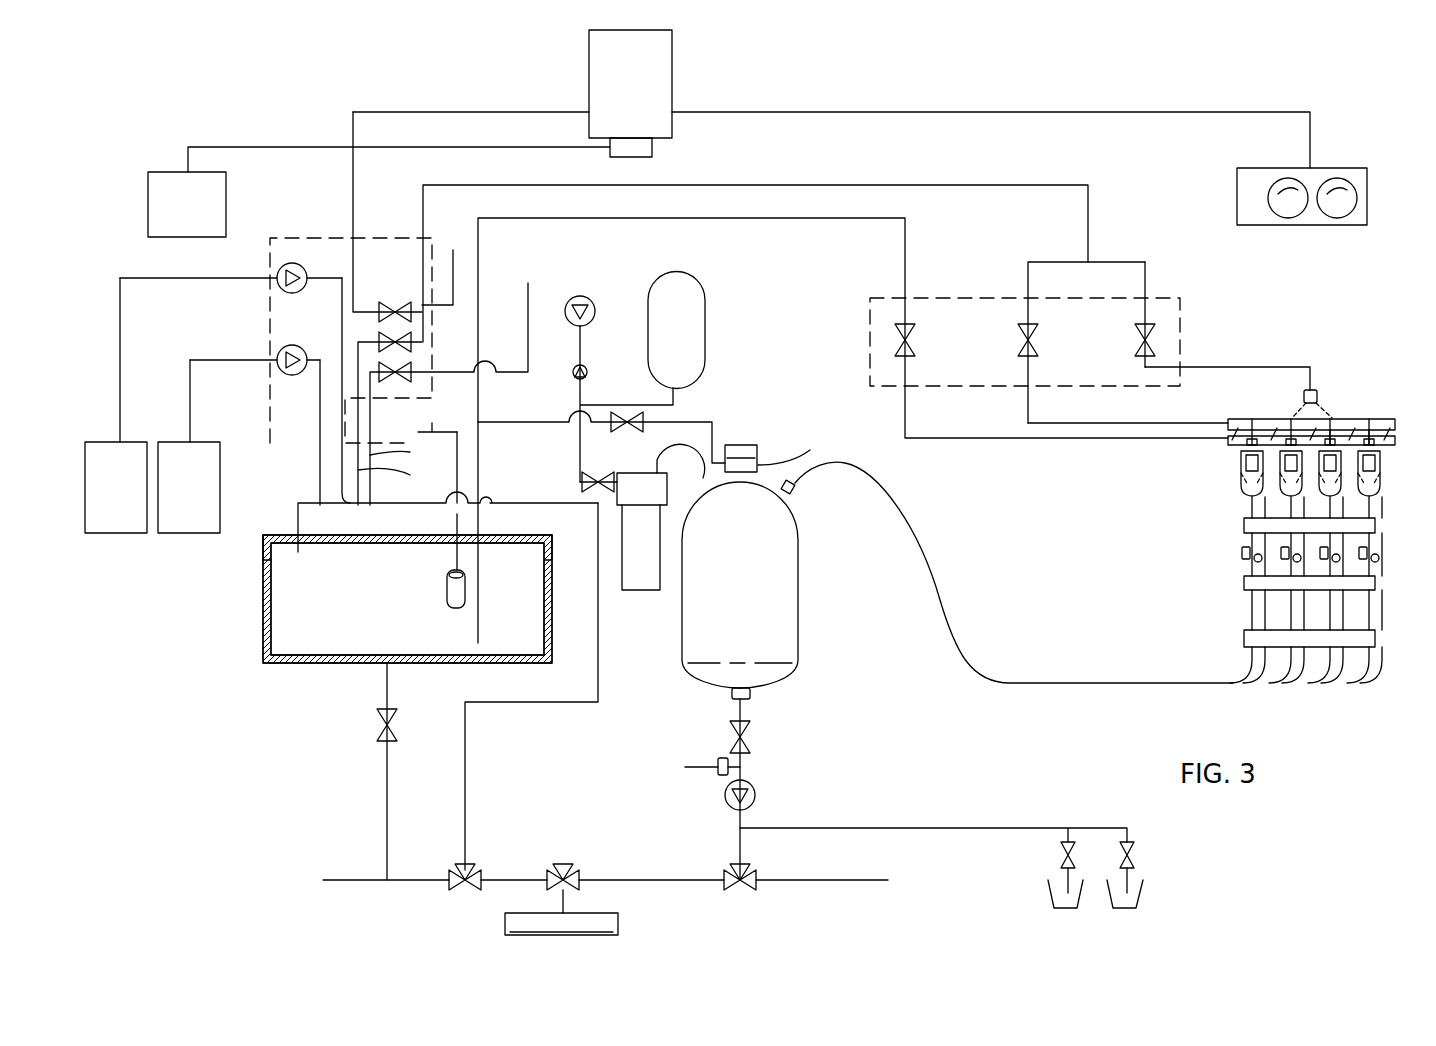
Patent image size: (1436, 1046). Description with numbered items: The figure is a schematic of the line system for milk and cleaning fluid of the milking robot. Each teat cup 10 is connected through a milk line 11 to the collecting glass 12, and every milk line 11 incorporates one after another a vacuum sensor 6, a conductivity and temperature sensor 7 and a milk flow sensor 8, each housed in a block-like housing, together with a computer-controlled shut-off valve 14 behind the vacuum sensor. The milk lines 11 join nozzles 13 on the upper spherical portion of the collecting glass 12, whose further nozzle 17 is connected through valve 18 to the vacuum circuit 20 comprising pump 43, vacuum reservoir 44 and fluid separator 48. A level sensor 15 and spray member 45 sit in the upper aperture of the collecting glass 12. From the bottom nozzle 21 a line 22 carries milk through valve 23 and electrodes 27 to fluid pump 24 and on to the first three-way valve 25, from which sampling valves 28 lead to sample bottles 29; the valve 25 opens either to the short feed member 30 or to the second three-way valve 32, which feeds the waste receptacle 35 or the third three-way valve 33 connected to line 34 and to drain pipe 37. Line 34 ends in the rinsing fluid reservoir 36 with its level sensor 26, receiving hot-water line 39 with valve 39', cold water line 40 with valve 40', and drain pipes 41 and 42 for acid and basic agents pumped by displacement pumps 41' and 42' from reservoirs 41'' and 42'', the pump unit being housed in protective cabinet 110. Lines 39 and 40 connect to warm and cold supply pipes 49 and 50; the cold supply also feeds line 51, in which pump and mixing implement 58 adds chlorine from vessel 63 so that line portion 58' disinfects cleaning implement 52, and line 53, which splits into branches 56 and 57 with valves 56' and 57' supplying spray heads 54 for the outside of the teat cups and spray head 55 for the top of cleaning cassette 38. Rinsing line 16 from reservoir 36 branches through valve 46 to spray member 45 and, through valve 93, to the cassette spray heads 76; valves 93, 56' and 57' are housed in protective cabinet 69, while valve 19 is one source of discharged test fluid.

The vacuum sensor 6 is at (1244, 522).
The conductivity sensor 7 is at (1244, 580).
The milk flow sensor 8 is at (1244, 636).
The teat cups 10 is at (1240, 485).
The milk line 11 is at (1365, 666).
The collecting glass 12 is at (798, 630).
The nozzles 13 is at (793, 478).
The shut-off valve 14 is at (1380, 558).
The level sensor 15 is at (757, 447).
The rinsing fluid line 16 is at (480, 246).
The nozzle 17 is at (661, 474).
The valve 18 is at (580, 482).
The valve 19 is at (378, 730).
The vacuum circuit 20 is at (612, 352).
The nozzle 21 is at (750, 692).
The line 22 is at (738, 706).
The valve 23 is at (750, 740).
The fluid pump 24 is at (755, 790).
The first three-way valve 25 is at (745, 892).
The level sensor 26 is at (447, 595).
The electrodes 27 is at (685, 767).
The valves 28 is at (937, 860).
The sample bottles 29 is at (1125, 925).
The feed member 30 is at (888, 880).
The second three-way valve 32 is at (570, 870).
The third three-way valve 33 is at (455, 892).
The line 34 is at (467, 808).
The receptacle 35 is at (618, 920).
The reservoir 36 is at (263, 640).
The drain pipe 37 is at (340, 880).
The cleaning cassette 38 is at (1365, 432).
The hot-water supply line 39 is at (407, 453).
The valve 39' is at (427, 383).
The cold water line 40 is at (401, 478).
The valve 40' is at (420, 417).
The drain pipe 41 is at (367, 407).
The displacement pump 41' is at (231, 270).
The reservoir 41'' is at (122, 433).
The drain pipe 42 is at (290, 432).
The displacement pump 42' is at (255, 350).
The reservoir 42'' is at (189, 484).
The vacuum pump 43 is at (588, 300).
The vacuum reservoir 44 is at (705, 295).
The spray member 45 is at (810, 450).
The valve 46 is at (620, 432).
The fluid separator 48 is at (645, 592).
The warm water supply pipe 49 is at (528, 290).
The cold water supply pipe 50 is at (453, 250).
The line 51 is at (353, 185).
The cleaning implement 52 is at (1250, 168).
The line 53 is at (423, 200).
The spray heads 54 is at (1228, 440).
The spray head 55 is at (1303, 396).
The line portion 56 is at (1128, 407).
The valve 56' is at (1081, 342).
The line portion 57 is at (1227, 359).
The valve 57' is at (1188, 314).
The pump and mixing implement 58 is at (662, 93).
The line portion 58' is at (831, 120).
The chlorine vessel 63 is at (226, 210).
The protective cabinet 69 is at (975, 298).
The spray heads 76 is at (1330, 425).
The valve 93 is at (915, 340).
The protective cabinet 110 is at (270, 385).